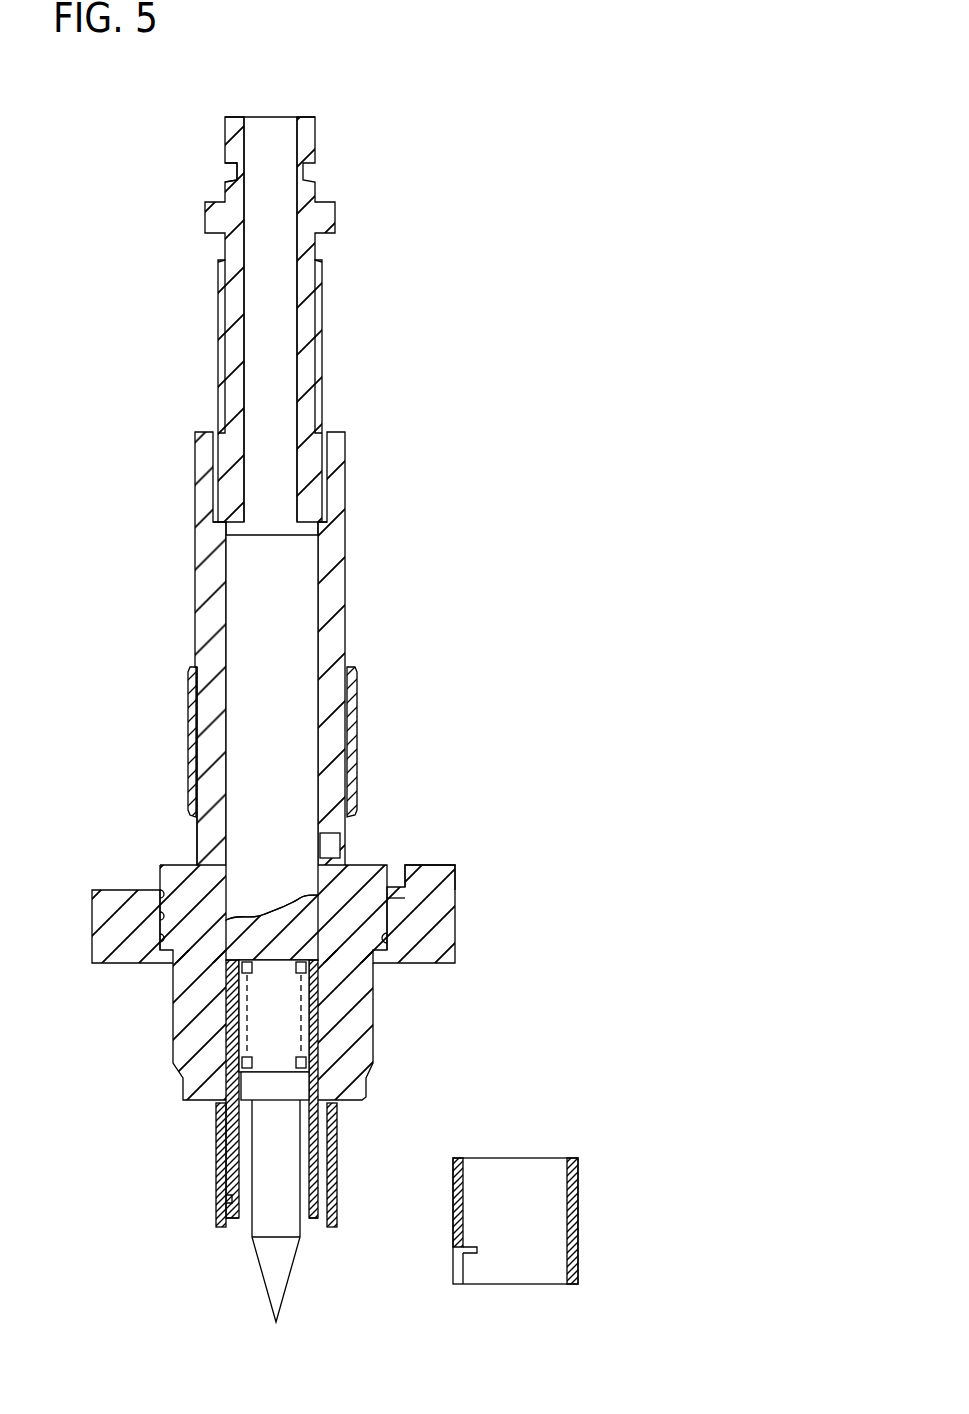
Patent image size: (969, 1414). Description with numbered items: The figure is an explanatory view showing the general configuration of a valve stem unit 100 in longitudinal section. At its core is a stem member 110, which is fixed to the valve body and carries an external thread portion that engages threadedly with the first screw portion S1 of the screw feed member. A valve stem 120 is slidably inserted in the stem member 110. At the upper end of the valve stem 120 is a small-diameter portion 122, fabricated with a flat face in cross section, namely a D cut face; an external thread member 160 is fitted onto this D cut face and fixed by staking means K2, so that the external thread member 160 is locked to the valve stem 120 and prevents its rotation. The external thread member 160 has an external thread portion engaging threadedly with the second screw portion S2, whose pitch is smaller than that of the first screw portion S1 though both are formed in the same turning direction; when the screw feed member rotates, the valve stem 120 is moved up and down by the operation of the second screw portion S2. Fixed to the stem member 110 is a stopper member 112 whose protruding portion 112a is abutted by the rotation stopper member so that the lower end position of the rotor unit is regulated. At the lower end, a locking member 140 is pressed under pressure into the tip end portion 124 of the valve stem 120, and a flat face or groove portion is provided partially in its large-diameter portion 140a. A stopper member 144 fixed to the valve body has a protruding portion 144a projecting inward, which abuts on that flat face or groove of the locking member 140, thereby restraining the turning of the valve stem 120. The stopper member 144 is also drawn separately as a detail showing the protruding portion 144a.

The valve stem unit 100 is at (408, 537).
The stem member 110 is at (373, 995).
The stopper member 112 is at (442, 932).
The protruding portion 112a is at (434, 864).
The valve stem 120 is at (296, 625).
The small-diameter portion 122 is at (272, 137).
The tip end portion 124 is at (318, 1068).
The locking member 140 is at (228, 1192).
The large-diameter portion 140a is at (313, 1225).
The stopper member 144 is at (337, 1137).
The protruding portion 144a is at (228, 1197).
The external thread member 160 is at (323, 215).
The staking means K2 is at (230, 175).
The first screw portion S1 is at (357, 752).
The second screw portion S2 is at (321, 331).